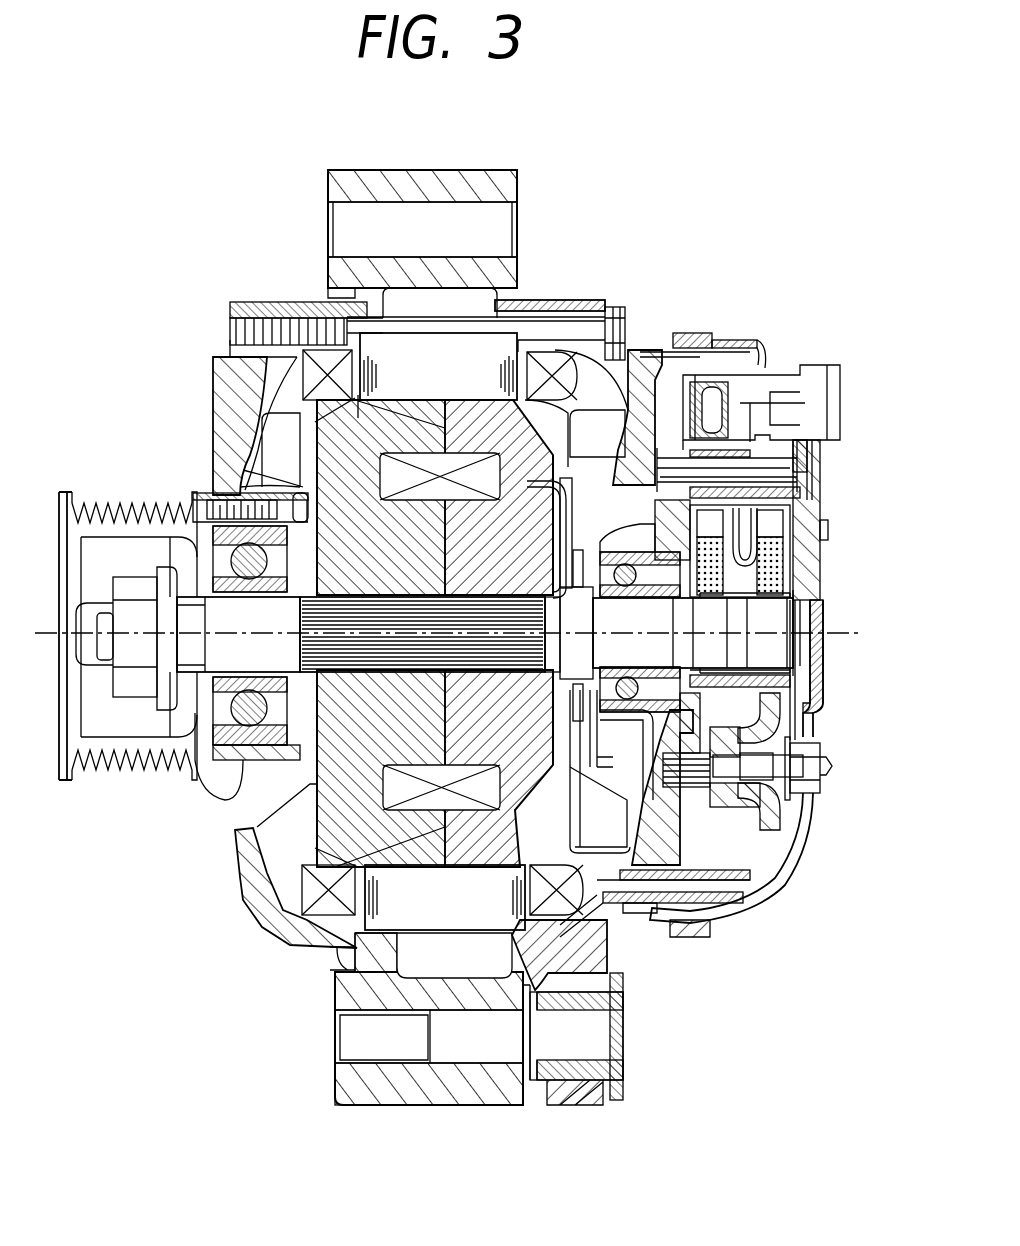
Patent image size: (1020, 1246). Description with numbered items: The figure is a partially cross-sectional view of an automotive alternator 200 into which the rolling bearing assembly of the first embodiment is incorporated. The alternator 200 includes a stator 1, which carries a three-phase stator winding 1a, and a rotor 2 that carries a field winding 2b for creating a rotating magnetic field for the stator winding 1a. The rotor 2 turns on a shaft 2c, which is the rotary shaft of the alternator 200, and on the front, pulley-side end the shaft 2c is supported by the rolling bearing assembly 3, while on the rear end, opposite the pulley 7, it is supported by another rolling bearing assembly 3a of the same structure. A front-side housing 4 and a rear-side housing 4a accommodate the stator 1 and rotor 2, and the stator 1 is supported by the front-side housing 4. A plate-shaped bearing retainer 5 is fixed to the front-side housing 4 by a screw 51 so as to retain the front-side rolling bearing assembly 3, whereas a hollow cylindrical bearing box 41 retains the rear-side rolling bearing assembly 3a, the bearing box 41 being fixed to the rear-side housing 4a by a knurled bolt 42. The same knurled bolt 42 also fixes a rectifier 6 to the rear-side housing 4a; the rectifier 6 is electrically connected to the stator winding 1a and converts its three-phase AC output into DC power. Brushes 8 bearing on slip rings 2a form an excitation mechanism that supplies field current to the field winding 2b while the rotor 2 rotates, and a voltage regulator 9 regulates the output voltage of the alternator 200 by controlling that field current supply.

The automotive alternator 200 is at (757, 214).
The stator 1 is at (482, 357).
The three-phase stator winding 1a is at (557, 357).
The rotor 2 is at (300, 337).
The slip rings 2a is at (780, 645).
The field winding 2b is at (405, 790).
The shaft 2c is at (220, 653).
The rolling bearing assembly 3 is at (227, 737).
The rolling bearing assembly 3a is at (636, 720).
The front-side housing 4 is at (233, 367).
The rear-side housing 4a is at (640, 345).
The bearing retainer 5 is at (205, 492).
The screw 51 is at (296, 485).
The rectifier 6 is at (782, 890).
The pulley 7 is at (64, 778).
The brushes 8 is at (777, 580).
The voltage regulator 9 is at (755, 393).
The bearing box 41 is at (707, 552).
The knurled bolt 42 is at (815, 775).